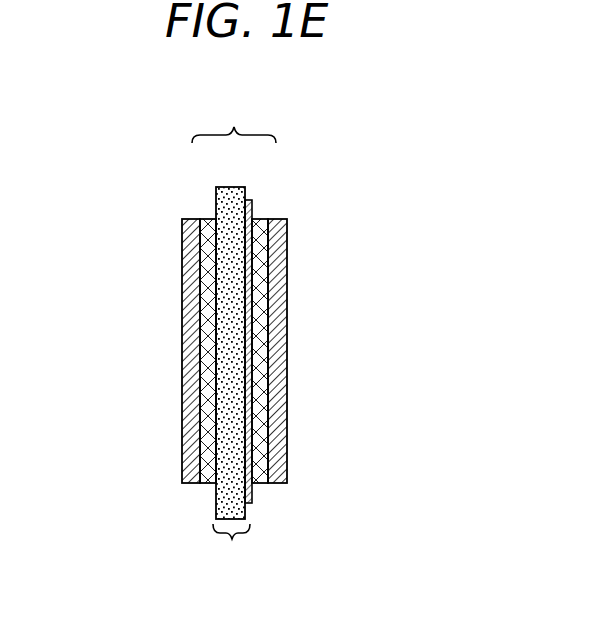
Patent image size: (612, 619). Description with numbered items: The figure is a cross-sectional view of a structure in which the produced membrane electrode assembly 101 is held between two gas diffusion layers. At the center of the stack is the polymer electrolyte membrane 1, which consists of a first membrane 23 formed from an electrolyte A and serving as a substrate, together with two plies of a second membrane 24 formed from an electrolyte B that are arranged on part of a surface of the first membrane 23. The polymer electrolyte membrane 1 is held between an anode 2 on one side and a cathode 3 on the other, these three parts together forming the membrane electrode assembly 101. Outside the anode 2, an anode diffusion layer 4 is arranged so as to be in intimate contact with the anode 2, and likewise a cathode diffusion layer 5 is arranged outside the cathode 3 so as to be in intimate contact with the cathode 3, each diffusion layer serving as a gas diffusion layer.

The membrane electrode assembly 101 is at (253, 118).
The polymer electrolyte membrane 1 is at (240, 570).
The anode 2 is at (208, 484).
The cathode 3 is at (263, 484).
The anode diffusion layer 4 is at (182, 323).
The cathode diffusion layer 5 is at (287, 328).
The first membrane 23 is at (233, 187).
The second membrane 24 is at (253, 210).